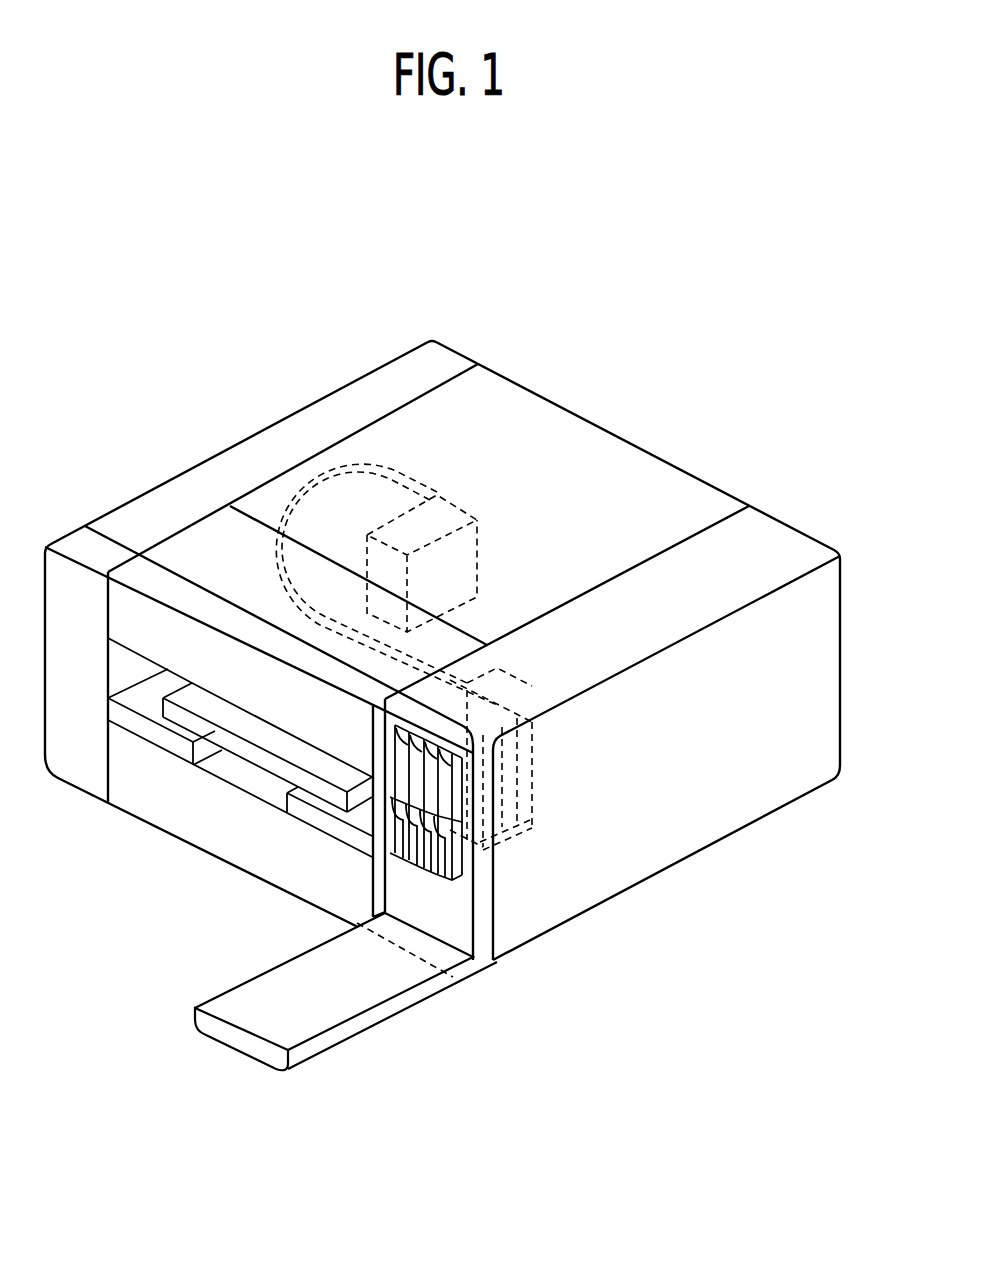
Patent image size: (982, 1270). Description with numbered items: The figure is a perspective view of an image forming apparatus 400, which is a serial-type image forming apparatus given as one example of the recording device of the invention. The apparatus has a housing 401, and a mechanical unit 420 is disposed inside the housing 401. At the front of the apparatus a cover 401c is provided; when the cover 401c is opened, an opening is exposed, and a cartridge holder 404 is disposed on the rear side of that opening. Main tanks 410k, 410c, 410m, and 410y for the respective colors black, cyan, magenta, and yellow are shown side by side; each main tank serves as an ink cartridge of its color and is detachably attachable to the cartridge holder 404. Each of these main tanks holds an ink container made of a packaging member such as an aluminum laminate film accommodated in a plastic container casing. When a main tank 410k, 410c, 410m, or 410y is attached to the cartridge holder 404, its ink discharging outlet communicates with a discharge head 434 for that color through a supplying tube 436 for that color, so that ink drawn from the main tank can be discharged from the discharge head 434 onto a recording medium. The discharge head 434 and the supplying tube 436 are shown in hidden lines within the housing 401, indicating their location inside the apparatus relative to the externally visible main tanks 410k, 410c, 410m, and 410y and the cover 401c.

The image forming apparatus 400 is at (802, 216).
The housing 401 is at (213, 455).
The cover 401c is at (373, 1017).
The cartridge holder 404 is at (531, 829).
The main tank for black 410k is at (400, 808).
The main tank for cyan 410c is at (410, 828).
The main tank for magenta 410m is at (418, 850).
The main tank for yellow 410y is at (428, 860).
The mechanical unit 420 is at (556, 502).
The discharge head 434 is at (447, 503).
The supplying tube 436 is at (306, 466).